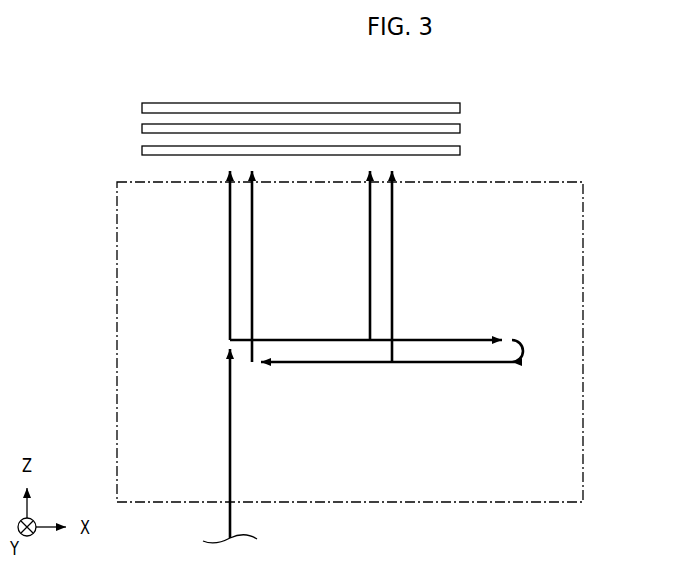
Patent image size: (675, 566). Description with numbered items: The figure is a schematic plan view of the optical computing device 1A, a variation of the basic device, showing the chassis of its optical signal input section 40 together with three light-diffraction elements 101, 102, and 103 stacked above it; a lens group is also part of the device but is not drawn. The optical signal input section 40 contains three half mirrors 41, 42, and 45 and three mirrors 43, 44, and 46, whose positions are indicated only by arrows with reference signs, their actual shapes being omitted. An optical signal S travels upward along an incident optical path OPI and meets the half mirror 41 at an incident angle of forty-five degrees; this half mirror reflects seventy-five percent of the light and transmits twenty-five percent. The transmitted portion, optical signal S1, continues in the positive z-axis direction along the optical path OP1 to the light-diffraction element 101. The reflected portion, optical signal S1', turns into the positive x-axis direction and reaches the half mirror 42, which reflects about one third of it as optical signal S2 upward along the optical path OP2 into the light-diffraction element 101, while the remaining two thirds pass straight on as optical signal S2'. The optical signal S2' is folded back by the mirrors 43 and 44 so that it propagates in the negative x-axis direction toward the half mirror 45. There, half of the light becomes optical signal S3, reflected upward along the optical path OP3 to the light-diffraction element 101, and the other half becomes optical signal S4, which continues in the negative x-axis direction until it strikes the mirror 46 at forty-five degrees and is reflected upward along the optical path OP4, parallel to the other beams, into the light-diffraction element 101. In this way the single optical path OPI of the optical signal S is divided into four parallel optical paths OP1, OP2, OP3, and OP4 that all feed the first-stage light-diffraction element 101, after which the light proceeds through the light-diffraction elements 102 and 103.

The optical computing device 1A is at (558, 117).
The light-diffraction element 101 is at (462, 151).
The light-diffraction element 102 is at (462, 127).
The light-diffraction element 103 is at (462, 104).
The optical signal input section 40 is at (584, 248).
The half mirror 41 is at (216, 340).
The half mirror 42 is at (361, 328).
The mirror 43 is at (540, 332).
The mirror 44 is at (541, 367).
The half mirror 45 is at (389, 378).
The mirror 46 is at (259, 379).
The optical signal S is at (229, 468).
The optical signal S1 is at (206, 255).
The optical signal S2 is at (345, 255).
The optical signal S3 is at (393, 217).
The optical signal S4 is at (253, 203).
The optical signal S1' is at (300, 315).
The optical signal S2' is at (436, 315).
The optical path OP1 is at (207, 206).
The optical path OP2 is at (349, 205).
The optical path OP3 is at (410, 250).
The optical path OP4 is at (266, 250).
The optical path OPI is at (207, 405).